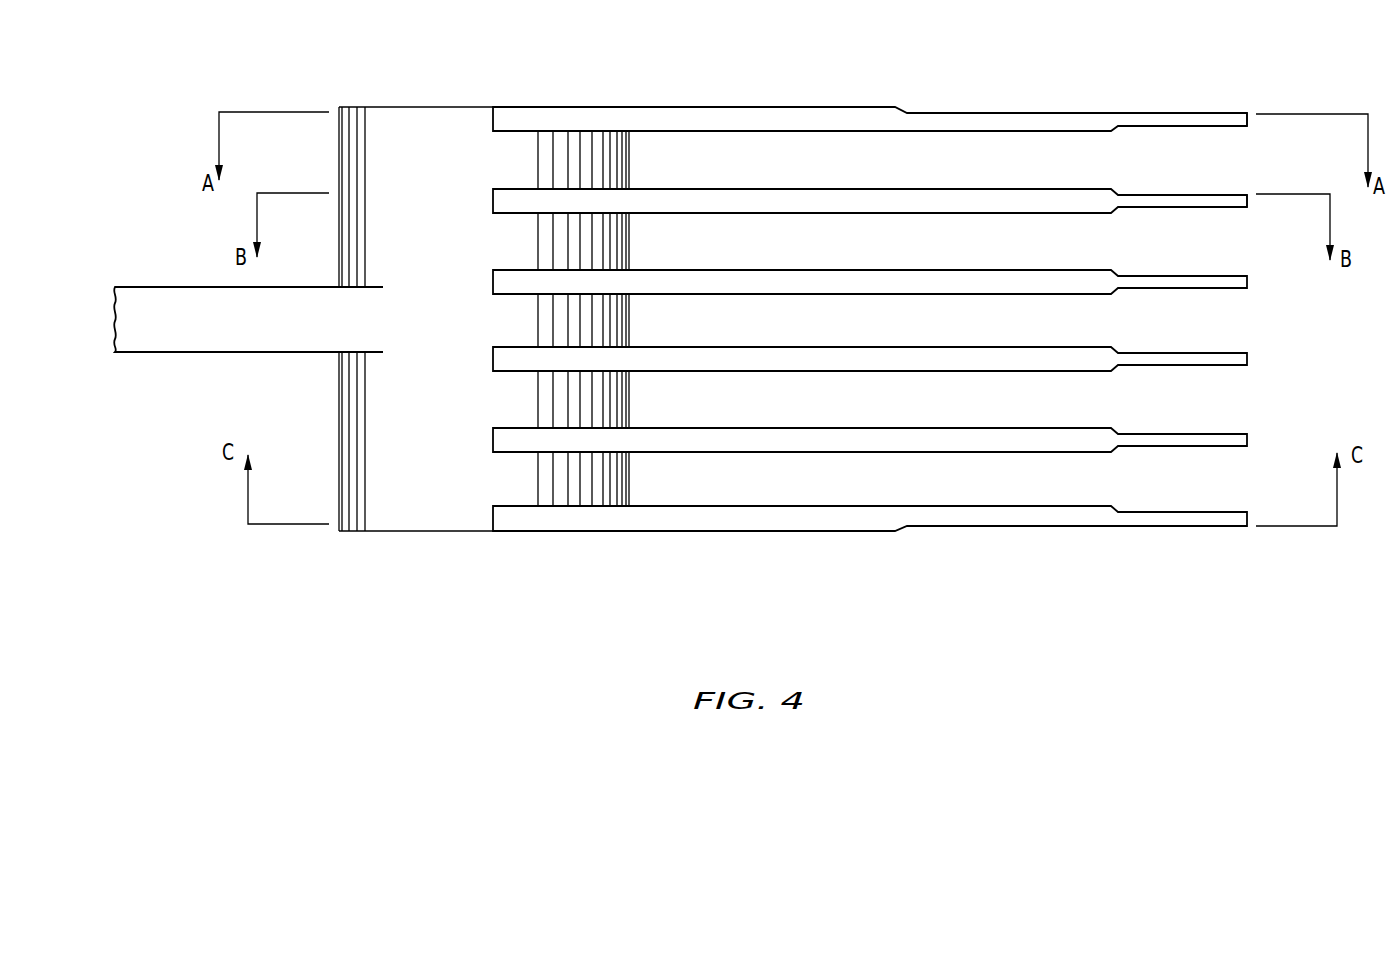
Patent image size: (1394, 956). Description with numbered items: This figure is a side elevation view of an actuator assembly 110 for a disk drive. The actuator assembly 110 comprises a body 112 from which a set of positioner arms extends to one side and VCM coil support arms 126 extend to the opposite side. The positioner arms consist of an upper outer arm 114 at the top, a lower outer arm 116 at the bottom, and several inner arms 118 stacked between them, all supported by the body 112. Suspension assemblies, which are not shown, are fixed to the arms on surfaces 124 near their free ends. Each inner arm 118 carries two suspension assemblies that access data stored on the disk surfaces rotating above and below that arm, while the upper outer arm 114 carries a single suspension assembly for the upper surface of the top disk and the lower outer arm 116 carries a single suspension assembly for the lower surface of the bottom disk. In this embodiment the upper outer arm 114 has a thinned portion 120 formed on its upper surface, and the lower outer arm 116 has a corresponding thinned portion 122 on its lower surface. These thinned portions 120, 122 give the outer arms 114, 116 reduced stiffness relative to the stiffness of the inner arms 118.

The actuator assembly 110 is at (564, 549).
The body 112 is at (474, 107).
The upper outer arm 114 is at (763, 107).
The lower outer arm 116 is at (760, 531).
The inner arms 118 is at (1218, 213).
The thinned portion 120 is at (1117, 103).
The thinned portion 122 is at (1117, 536).
The surfaces 124 is at (1238, 127).
The VCM coil support arms 126 is at (173, 353).